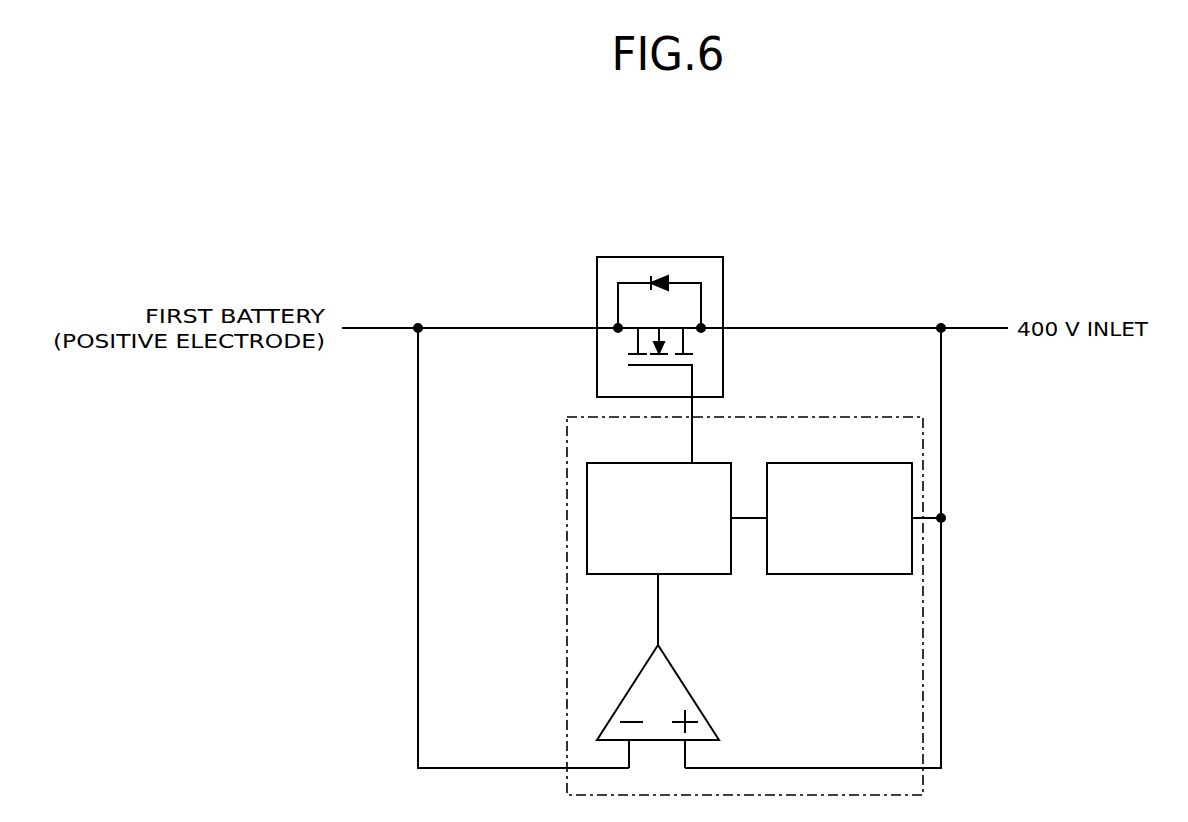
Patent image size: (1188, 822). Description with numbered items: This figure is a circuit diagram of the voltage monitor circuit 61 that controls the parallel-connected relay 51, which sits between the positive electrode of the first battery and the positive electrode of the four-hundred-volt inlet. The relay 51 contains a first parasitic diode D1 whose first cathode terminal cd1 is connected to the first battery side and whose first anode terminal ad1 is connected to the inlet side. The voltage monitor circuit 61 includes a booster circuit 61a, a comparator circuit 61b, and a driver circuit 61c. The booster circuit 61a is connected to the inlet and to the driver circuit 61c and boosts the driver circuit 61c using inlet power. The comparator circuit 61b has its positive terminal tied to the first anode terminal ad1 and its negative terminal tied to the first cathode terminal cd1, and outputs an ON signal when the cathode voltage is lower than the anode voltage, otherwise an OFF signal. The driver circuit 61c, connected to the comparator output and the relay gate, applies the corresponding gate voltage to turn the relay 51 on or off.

The parallel-connected relay 51 is at (684, 316).
The first parasitic diode D1 is at (655, 275).
The first cathode terminal cd1 is at (630, 283).
The first anode terminal ad1 is at (686, 283).
The voltage monitor circuit 61 is at (745, 594).
The booster circuit 61a is at (870, 446).
The comparator circuit 61b is at (687, 683).
The driver circuit 61c is at (710, 446).